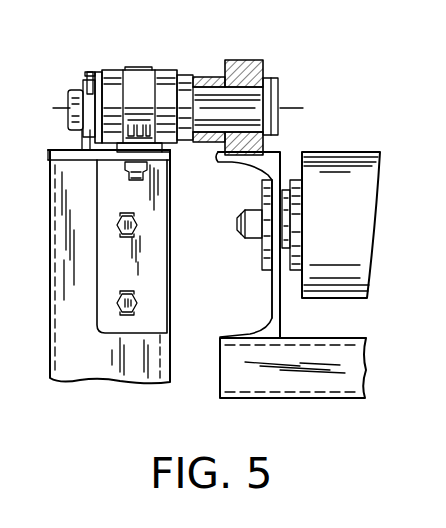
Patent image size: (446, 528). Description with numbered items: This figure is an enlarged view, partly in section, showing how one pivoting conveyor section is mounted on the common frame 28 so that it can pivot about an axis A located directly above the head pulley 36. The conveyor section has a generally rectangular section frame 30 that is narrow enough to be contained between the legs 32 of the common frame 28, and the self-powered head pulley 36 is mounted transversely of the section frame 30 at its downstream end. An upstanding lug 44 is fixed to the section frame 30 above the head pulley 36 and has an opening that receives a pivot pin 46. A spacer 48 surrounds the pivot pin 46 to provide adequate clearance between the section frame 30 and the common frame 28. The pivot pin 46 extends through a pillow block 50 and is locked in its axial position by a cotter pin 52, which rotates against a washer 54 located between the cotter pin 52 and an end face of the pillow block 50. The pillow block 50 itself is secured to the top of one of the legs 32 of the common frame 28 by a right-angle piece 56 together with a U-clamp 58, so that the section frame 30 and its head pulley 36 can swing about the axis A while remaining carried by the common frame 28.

The common frame 28 is at (103, 357).
The section frame 30 is at (263, 382).
The legs 32 is at (171, 198).
The head pulley 36 is at (353, 162).
The upstanding lug 44 is at (248, 60).
The pivot pin 46 is at (279, 82).
The spacer 48 is at (206, 75).
The pillow block 50 is at (173, 70).
The cotter pin 52 is at (88, 72).
The washer 54 is at (98, 74).
The right-angle piece 56 is at (143, 275).
The U-clamp 58 is at (138, 68).
The axis A is at (303, 108).